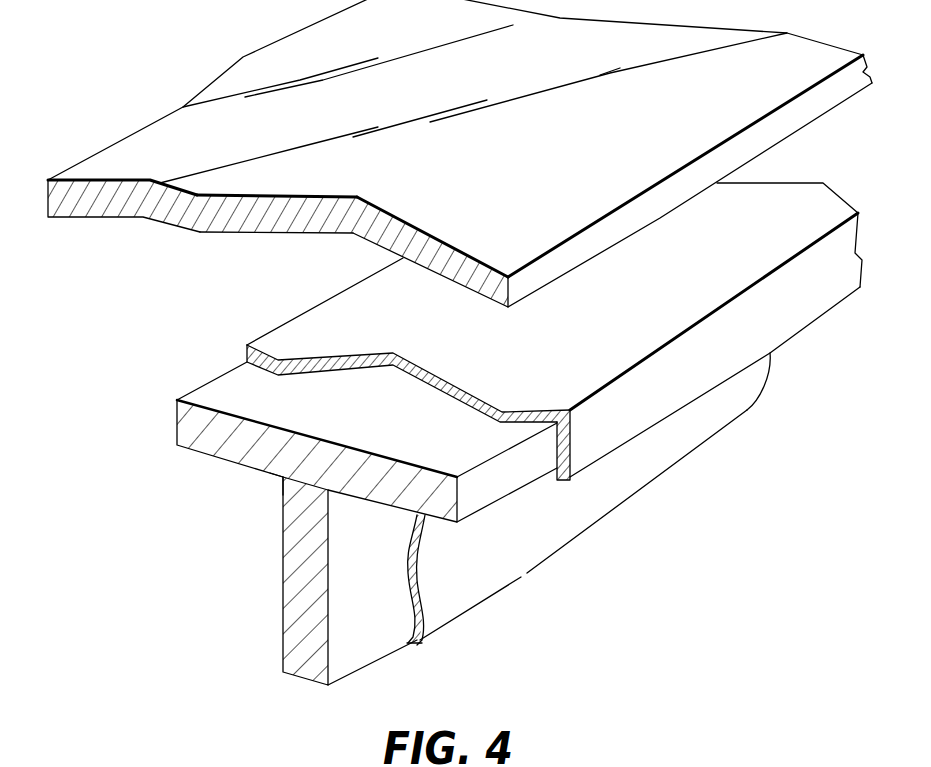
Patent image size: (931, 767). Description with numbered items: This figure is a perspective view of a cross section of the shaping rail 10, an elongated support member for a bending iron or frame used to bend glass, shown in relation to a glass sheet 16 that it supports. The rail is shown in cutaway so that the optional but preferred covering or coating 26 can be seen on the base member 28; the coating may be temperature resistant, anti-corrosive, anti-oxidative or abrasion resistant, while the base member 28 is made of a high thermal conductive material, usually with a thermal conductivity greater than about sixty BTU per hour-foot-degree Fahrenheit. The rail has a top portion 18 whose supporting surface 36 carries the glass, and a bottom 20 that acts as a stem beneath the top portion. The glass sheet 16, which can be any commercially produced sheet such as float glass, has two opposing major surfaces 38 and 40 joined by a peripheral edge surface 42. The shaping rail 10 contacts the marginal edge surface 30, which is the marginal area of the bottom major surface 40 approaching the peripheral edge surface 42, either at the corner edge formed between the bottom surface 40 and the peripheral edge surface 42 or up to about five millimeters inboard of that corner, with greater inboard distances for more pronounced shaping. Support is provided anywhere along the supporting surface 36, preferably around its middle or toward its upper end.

The shaping rail 10 is at (707, 360).
The glass sheet 16 is at (795, 120).
The top portion 18 is at (175, 425).
The bottom 20 is at (357, 650).
The covering or coating 26 is at (570, 445).
The base member 28 is at (295, 478).
The marginal edge surface 30 is at (447, 280).
The supporting surface 36 is at (230, 387).
The major surface 38 is at (257, 63).
The bottom major surface 40 is at (118, 218).
The peripheral edge surface 42 is at (633, 215).